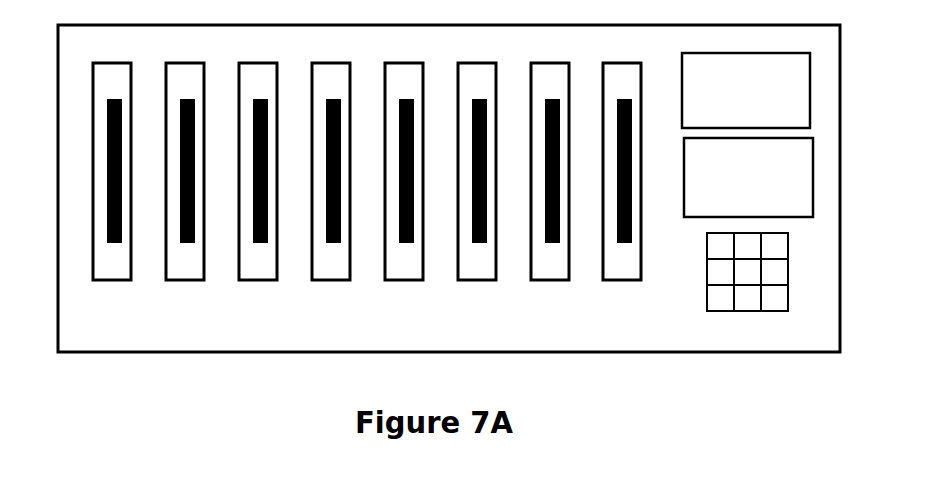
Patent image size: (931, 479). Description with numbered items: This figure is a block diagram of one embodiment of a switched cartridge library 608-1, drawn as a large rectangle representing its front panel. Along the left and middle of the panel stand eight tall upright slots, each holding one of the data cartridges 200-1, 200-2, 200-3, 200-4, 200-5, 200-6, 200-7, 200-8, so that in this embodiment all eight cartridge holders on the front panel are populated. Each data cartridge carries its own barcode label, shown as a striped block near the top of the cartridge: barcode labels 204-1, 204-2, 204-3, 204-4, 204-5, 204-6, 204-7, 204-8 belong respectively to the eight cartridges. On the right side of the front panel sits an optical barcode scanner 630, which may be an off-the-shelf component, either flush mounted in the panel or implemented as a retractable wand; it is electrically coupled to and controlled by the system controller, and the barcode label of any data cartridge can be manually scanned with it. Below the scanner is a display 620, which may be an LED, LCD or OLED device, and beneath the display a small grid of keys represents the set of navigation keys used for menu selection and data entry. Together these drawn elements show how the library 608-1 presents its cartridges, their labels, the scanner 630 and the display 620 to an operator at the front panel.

The switched cartridge library 608-1 is at (781, 346).
The optical barcode scanner 630 is at (772, 125).
The display 620 is at (773, 209).
The data cartridge 200-1 is at (112, 281).
The data cartridge 200-2 is at (185, 281).
The data cartridge 200-3 is at (258, 281).
The data cartridge 200-4 is at (331, 281).
The data cartridge 200-5 is at (404, 281).
The data cartridge 200-6 is at (477, 281).
The data cartridge 200-7 is at (550, 281).
The data cartridge 200-8 is at (622, 281).
The barcode label 204-1 is at (114, 99).
The barcode label 204-2 is at (187, 99).
The barcode label 204-3 is at (260, 99).
The barcode label 204-4 is at (333, 99).
The barcode label 204-5 is at (406, 99).
The barcode label 204-6 is at (479, 99).
The barcode label 204-7 is at (552, 99).
The barcode label 204-8 is at (624, 99).